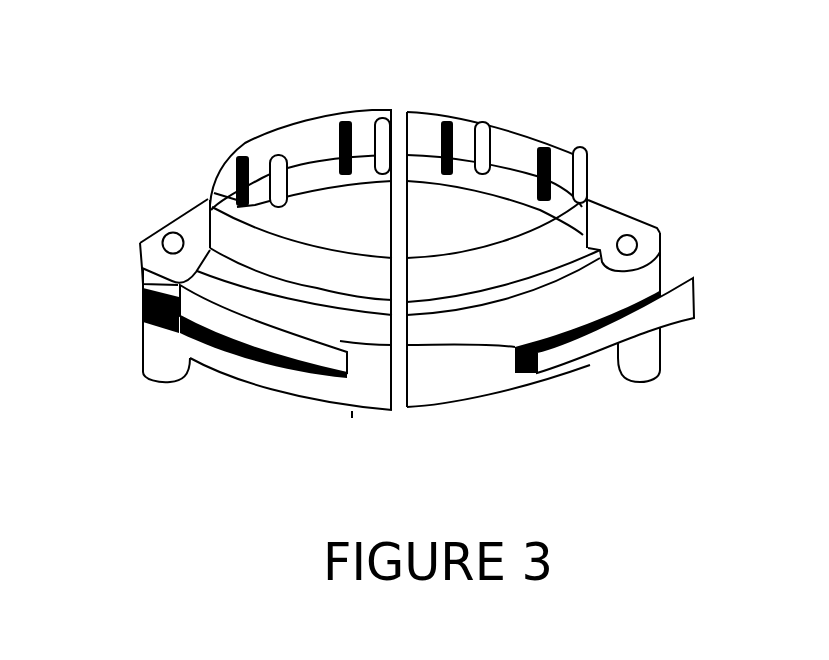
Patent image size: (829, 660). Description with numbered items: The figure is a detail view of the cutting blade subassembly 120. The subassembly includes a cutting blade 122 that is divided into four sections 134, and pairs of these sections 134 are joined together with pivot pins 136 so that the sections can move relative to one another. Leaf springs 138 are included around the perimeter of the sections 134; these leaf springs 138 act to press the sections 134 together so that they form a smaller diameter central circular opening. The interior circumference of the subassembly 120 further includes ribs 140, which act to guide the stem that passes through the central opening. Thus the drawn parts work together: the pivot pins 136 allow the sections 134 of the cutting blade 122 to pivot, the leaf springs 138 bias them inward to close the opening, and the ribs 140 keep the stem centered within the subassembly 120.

The cutting blade subassembly 120 is at (124, 270).
The cutting blade 122 is at (318, 140).
The sections 134 is at (287, 230).
The pivot pins 136 is at (660, 233).
The leaf springs 138 is at (318, 357).
The ribs 140 is at (577, 153).